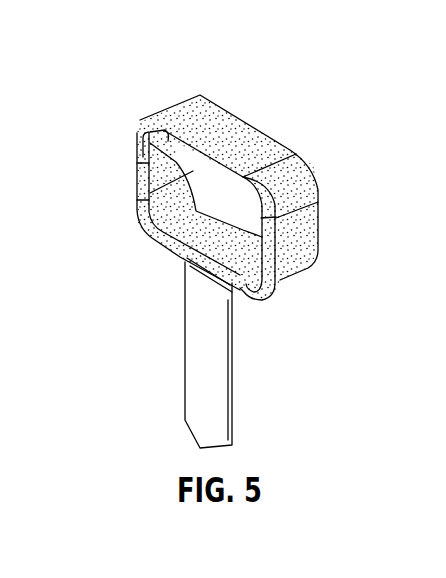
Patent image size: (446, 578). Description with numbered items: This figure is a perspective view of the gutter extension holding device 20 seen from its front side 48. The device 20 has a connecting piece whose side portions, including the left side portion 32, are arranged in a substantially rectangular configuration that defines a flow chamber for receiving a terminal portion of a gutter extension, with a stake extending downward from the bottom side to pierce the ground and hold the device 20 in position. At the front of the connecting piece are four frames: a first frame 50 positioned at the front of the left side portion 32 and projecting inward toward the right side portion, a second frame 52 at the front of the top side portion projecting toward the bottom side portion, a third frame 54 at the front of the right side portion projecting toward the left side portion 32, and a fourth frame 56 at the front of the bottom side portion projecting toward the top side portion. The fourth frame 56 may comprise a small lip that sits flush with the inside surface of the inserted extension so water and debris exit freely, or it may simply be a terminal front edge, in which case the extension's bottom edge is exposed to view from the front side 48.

The gutter extension holding device 20 is at (203, 228).
The left side portion 32 is at (297, 242).
The front side 48 is at (143, 307).
The first frame 50 is at (286, 255).
The second frame 52 is at (140, 193).
The third frame 54 is at (147, 197).
The fourth frame 56 is at (162, 255).